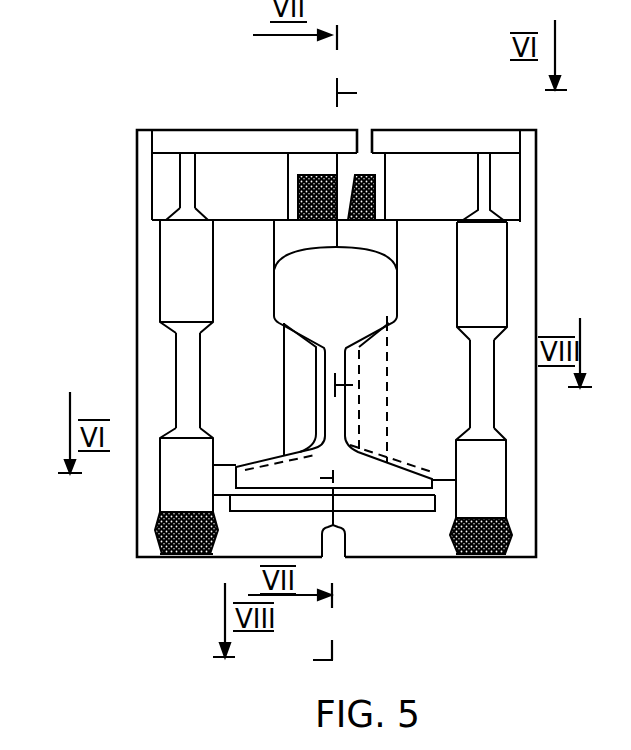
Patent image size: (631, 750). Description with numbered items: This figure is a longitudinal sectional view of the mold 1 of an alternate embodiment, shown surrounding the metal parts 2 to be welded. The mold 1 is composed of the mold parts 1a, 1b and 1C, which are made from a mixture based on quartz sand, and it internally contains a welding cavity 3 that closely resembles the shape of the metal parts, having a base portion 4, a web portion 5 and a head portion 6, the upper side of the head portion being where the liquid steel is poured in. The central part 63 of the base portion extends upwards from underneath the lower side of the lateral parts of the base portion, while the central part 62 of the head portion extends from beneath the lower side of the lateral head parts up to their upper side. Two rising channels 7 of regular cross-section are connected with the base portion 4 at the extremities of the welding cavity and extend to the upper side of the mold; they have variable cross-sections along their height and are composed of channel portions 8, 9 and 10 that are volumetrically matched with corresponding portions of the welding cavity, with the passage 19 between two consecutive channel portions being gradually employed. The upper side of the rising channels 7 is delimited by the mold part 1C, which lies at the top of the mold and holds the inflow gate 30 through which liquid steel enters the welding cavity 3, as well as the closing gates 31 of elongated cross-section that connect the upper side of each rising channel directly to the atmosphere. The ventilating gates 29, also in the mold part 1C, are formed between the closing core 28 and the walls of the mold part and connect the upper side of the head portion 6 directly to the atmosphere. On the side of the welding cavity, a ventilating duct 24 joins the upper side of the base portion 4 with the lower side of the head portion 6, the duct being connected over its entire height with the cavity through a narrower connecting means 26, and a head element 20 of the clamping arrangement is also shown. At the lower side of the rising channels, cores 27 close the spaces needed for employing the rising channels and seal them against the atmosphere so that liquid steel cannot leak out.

The mold 1 is at (384, 523).
The mold part 1a is at (227, 547).
The mold part 1b is at (420, 553).
The mold part 1C is at (440, 185).
The rail 2 is at (433, 354).
The welding cavity 3 is at (377, 237).
The base portion 4 is at (433, 490).
The web portion 5 is at (347, 366).
The head portion 6 is at (399, 285).
The rising channels 7 is at (489, 410).
The channel portion 8 is at (178, 495).
The channel portion 9 is at (187, 363).
The channel portion 10 is at (178, 282).
The passage 19 is at (490, 445).
The bolt head 20 is at (175, 227).
The ventilating duct 24 is at (295, 383).
The connecting means 26 is at (312, 352).
The cores 27 is at (163, 555).
The closing core 28 is at (328, 173).
The ventilating gates 29 is at (292, 183).
The inflow gate 30 is at (348, 190).
The closing gate 31 is at (190, 165).
The central part of head portion 62 is at (388, 358).
The central part of base portion 63 is at (400, 507).